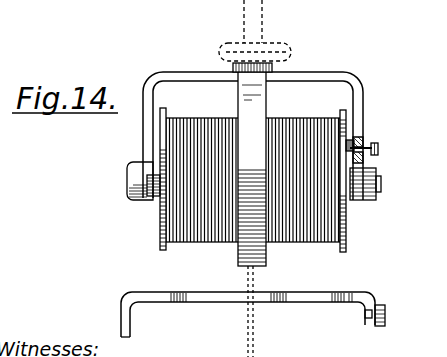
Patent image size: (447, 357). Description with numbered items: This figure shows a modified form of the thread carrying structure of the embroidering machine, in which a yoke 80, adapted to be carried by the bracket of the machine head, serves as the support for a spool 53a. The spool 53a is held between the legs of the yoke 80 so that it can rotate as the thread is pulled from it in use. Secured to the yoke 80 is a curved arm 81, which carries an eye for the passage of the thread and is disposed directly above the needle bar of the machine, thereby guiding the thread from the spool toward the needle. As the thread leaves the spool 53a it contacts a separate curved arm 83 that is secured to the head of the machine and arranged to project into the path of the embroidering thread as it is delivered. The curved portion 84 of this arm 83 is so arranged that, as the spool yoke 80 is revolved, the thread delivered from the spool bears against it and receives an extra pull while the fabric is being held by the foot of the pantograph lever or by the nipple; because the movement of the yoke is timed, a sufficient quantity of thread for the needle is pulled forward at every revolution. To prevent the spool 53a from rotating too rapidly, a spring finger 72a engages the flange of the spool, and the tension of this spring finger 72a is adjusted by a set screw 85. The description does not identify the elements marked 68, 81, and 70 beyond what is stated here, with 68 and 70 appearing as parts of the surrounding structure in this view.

The head 68 is at (283, 49).
The yoke 80 is at (186, 72).
The spool 53a is at (166, 112).
The curved arm 81 is at (252, 164).
The roller 70 is at (253, 180).
The set screw 85 is at (379, 149).
The spring finger 72a is at (366, 160).
The curved arm 83 is at (229, 296).
The curved portion 84 is at (285, 297).